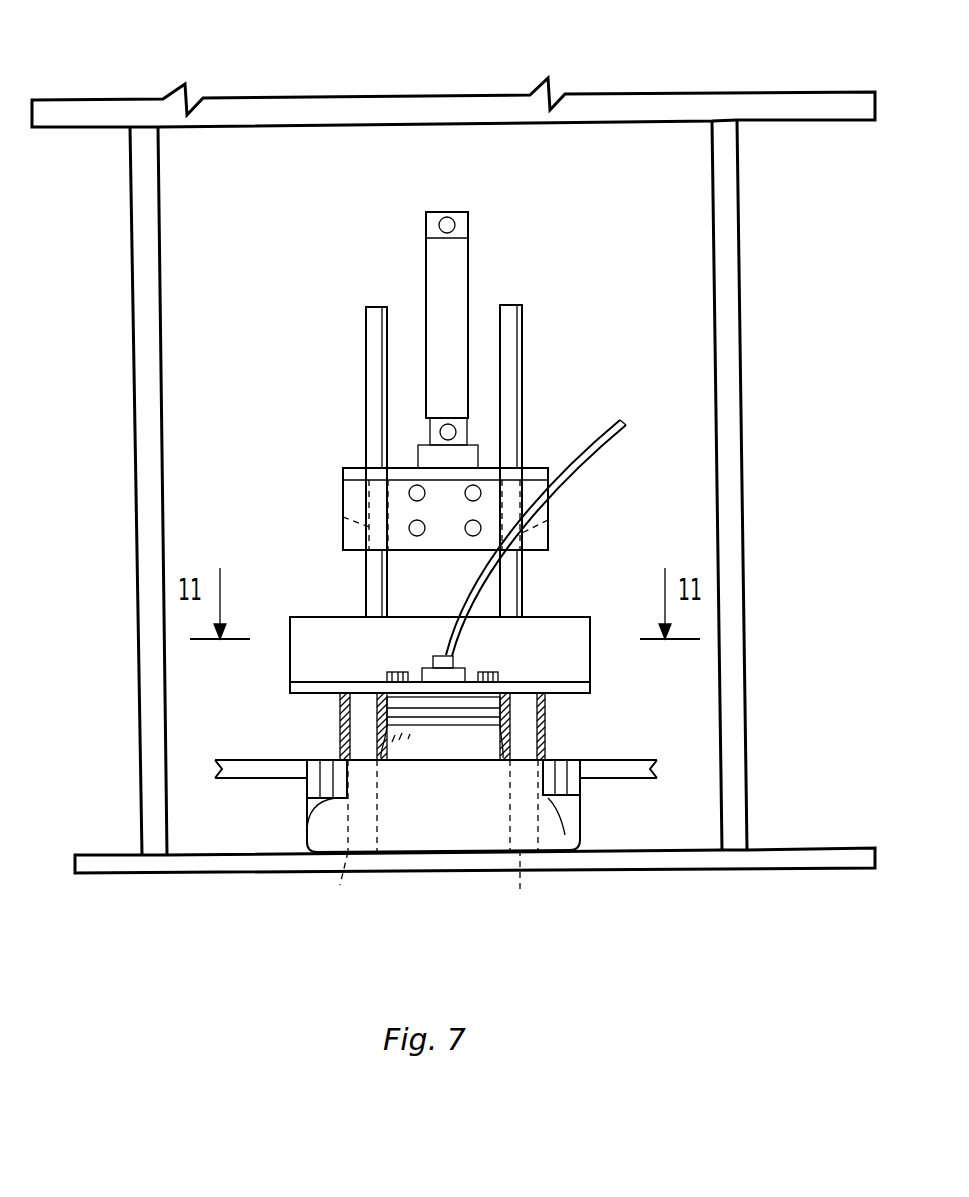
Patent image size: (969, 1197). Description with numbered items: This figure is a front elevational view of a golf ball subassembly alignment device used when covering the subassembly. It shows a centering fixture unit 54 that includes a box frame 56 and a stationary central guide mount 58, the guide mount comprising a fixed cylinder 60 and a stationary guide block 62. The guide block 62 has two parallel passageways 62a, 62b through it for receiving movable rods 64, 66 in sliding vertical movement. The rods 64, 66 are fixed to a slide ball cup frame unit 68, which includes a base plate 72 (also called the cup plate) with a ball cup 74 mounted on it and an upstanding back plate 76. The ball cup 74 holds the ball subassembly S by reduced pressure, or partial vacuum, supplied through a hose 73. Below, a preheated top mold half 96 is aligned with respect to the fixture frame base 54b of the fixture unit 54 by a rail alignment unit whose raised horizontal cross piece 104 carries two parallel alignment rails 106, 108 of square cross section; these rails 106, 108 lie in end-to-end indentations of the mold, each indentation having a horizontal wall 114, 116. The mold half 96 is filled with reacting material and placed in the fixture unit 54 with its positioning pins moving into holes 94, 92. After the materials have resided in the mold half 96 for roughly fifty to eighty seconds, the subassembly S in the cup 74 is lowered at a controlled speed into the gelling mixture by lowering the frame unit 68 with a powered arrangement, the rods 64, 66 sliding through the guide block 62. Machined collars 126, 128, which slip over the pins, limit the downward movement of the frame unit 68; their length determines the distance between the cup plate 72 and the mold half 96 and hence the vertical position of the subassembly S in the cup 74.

The centering fixture unit 54 is at (412, 104).
The fixture frame base 54b is at (780, 862).
The box frame 56 is at (730, 215).
The stationary central guide mount 58 is at (433, 324).
The fixed cylinder 60 is at (430, 255).
The stationary guide block 62 is at (443, 537).
The passageway 62a is at (548, 510).
The passageway 62b is at (343, 510).
The movable rod 64 is at (375, 335).
The movable rod 66 is at (515, 335).
The slide ball cup frame unit 68 is at (493, 597).
The base plate 72 is at (580, 688).
The hose 73 is at (612, 415).
The ball cup 74 is at (340, 705).
The upstanding back plate 76 is at (580, 665).
The hole 92 is at (334, 894).
The hole 94 is at (520, 896).
The top mold half 96 is at (471, 832).
The raised horizontal cross piece 104 is at (618, 768).
The alignment rail 106 is at (572, 778).
The alignment rail 108 is at (320, 785).
The horizontal wall 114 is at (550, 800).
The horizontal wall 116 is at (325, 805).
The machined collar 126 is at (545, 728).
The machined collar 128 is at (340, 735).
The ball subassembly S is at (432, 748).